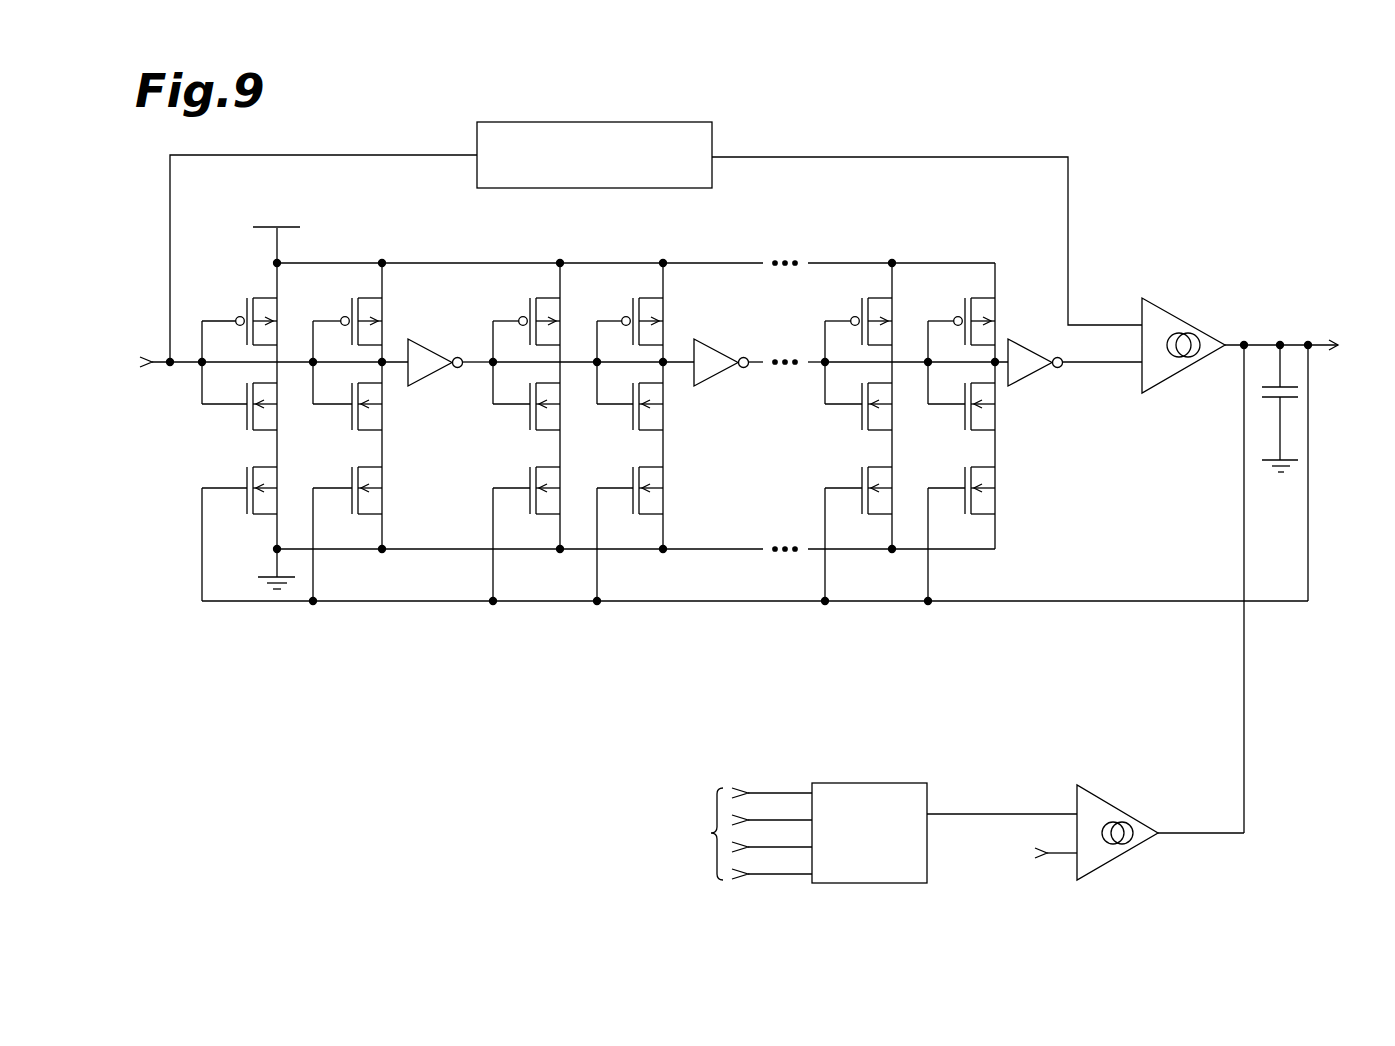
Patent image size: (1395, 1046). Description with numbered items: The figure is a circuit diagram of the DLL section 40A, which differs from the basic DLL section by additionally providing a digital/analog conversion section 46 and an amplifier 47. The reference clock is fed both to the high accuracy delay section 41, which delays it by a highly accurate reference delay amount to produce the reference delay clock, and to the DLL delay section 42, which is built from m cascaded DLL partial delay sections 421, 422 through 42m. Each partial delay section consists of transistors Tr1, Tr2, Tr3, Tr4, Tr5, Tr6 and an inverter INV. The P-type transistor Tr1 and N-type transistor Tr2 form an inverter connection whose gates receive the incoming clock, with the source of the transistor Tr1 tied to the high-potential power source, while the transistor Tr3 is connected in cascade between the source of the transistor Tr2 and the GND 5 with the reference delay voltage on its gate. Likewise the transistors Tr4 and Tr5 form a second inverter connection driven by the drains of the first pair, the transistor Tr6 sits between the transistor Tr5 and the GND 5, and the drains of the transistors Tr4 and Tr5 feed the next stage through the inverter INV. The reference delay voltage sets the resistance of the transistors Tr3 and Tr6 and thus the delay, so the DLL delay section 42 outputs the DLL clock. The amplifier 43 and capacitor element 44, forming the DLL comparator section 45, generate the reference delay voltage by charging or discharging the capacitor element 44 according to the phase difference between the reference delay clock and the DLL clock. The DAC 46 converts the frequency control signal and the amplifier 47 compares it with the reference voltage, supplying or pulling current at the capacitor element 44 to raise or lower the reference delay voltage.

The DLL section 40A is at (1262, 152).
The high accuracy delay section 41 is at (687, 122).
The DLL delay section 42 is at (659, 496).
The DLL partial delay section 421 is at (334, 479).
The DLL partial delay section 422 is at (583, 614).
The DLL partial delay section 42m is at (975, 479).
The amplifier 43 is at (1183, 320).
The capacitor element 44 is at (1287, 385).
The DLL comparator section 45 is at (1312, 264).
The digital/analog conversion section 46 is at (899, 783).
The amplifier 47 is at (1120, 810).
The GND 5 is at (268, 577).
The transistor Tr1 is at (245, 310).
The transistor Tr2 is at (245, 415).
The transistor Tr3 is at (245, 480).
The transistor Tr4 is at (350, 310).
The transistor Tr5 is at (350, 415).
The transistor Tr6 is at (350, 480).
The inverter INV is at (432, 345).